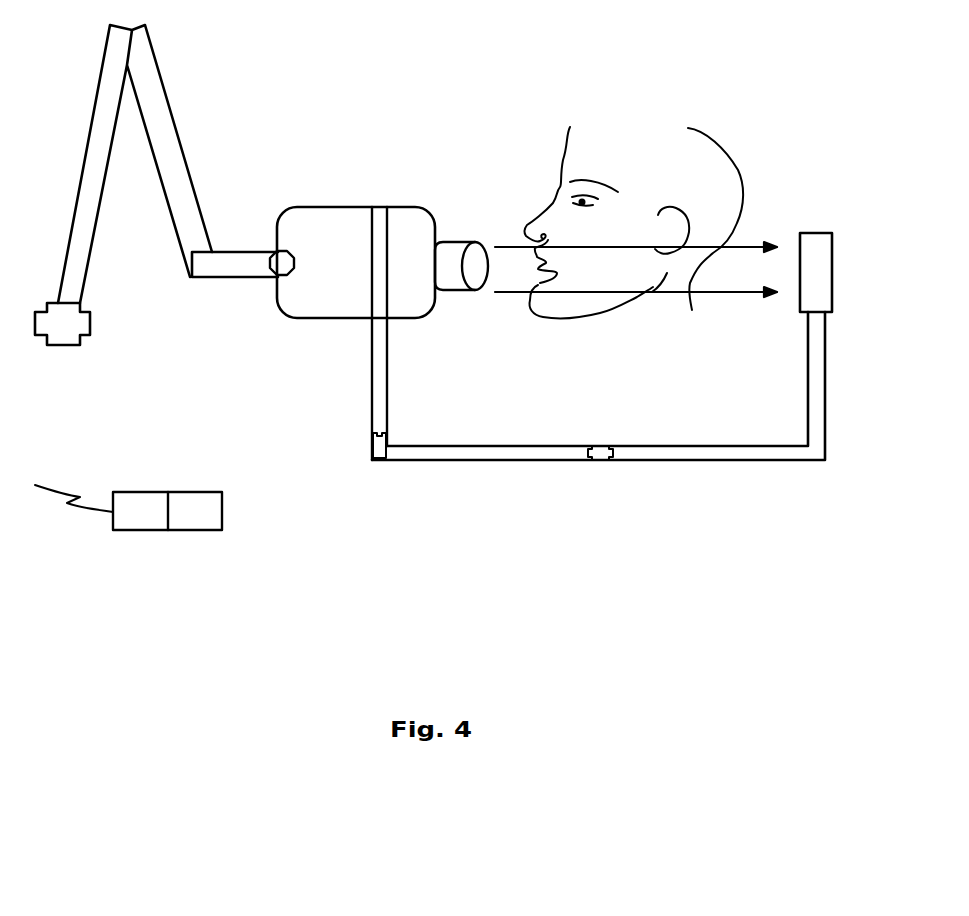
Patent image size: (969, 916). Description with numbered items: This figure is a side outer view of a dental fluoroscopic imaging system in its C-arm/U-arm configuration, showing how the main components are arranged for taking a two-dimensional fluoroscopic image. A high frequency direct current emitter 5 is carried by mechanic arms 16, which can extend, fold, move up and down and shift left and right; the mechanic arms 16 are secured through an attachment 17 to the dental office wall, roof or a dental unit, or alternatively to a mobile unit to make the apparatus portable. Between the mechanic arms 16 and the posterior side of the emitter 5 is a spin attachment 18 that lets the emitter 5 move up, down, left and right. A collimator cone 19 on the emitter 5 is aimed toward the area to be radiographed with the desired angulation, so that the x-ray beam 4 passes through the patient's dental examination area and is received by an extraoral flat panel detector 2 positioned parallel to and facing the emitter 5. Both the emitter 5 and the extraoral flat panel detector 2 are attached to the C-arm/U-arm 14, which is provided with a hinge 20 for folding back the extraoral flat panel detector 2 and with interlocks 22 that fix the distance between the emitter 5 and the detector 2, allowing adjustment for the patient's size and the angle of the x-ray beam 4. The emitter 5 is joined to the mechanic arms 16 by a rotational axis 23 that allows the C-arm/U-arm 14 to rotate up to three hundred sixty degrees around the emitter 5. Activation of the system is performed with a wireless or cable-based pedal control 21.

The extraoral flat panel detector 2 is at (838, 258).
The x-ray beam 4 is at (643, 293).
The emitter 5 is at (338, 207).
The C-arm/U-arm 14 is at (762, 465).
The mechanic arms 16 is at (90, 257).
The attachment 17 is at (68, 350).
The spin attachment 18 is at (276, 256).
The collimator cone 19 is at (457, 235).
The hinge 20 is at (367, 446).
The pedal control 21 is at (222, 510).
The interlocks 22 is at (597, 465).
The rotational axis 23 is at (378, 265).